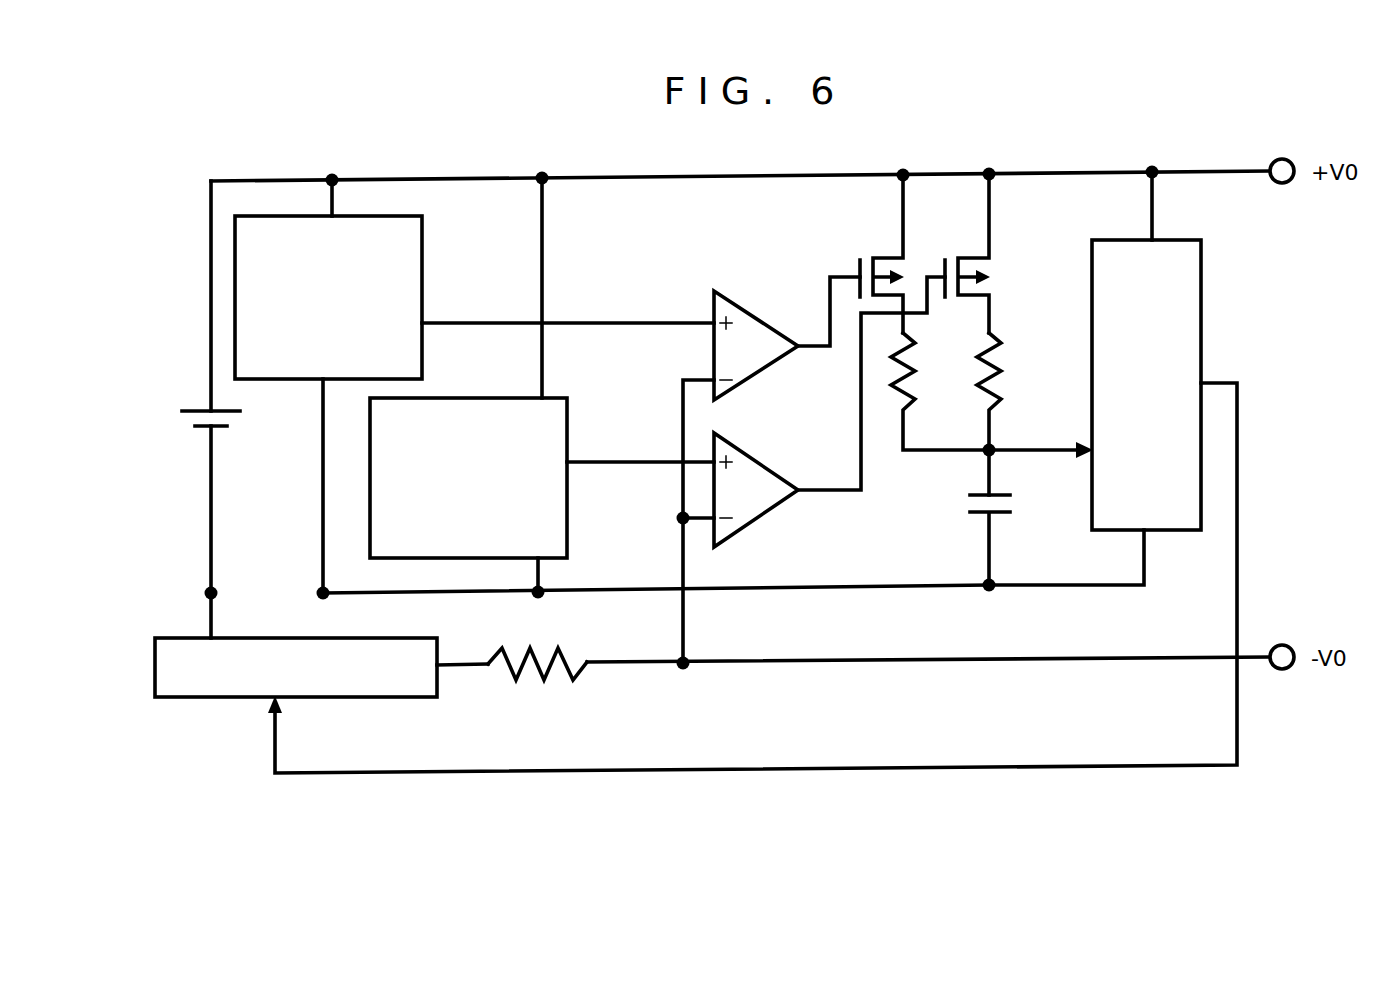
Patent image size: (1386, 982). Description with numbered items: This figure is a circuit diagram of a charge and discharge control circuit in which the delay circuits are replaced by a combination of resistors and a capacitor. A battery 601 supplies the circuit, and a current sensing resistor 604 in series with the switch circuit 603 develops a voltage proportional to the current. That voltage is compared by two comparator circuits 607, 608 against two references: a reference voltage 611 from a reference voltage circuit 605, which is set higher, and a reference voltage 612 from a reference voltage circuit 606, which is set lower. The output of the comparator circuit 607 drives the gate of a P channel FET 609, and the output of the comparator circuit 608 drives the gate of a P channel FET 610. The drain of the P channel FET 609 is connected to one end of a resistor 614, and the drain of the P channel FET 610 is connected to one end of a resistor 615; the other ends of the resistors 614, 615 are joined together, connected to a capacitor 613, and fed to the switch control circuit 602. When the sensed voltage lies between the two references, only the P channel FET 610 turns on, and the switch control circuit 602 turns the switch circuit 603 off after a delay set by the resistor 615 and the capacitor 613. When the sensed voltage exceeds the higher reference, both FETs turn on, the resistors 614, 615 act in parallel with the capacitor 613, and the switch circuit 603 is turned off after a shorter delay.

The battery 601 is at (190, 403).
The switch control circuit 602 is at (1201, 305).
The switch circuit 603 is at (305, 698).
The current sensing resistor 604 is at (567, 695).
The reference voltage circuit 605 is at (405, 221).
The reference voltage circuit 606 is at (587, 412).
The comparator circuit 607 is at (742, 307).
The comparator circuit 608 is at (773, 513).
The P channel FET 609 is at (918, 263).
The P channel FET 610 is at (997, 260).
The reference voltage 611 is at (568, 303).
The reference voltage 612 is at (640, 447).
The capacitor 613 is at (965, 503).
The resistor 614 is at (882, 383).
The resistor 615 is at (1000, 367).